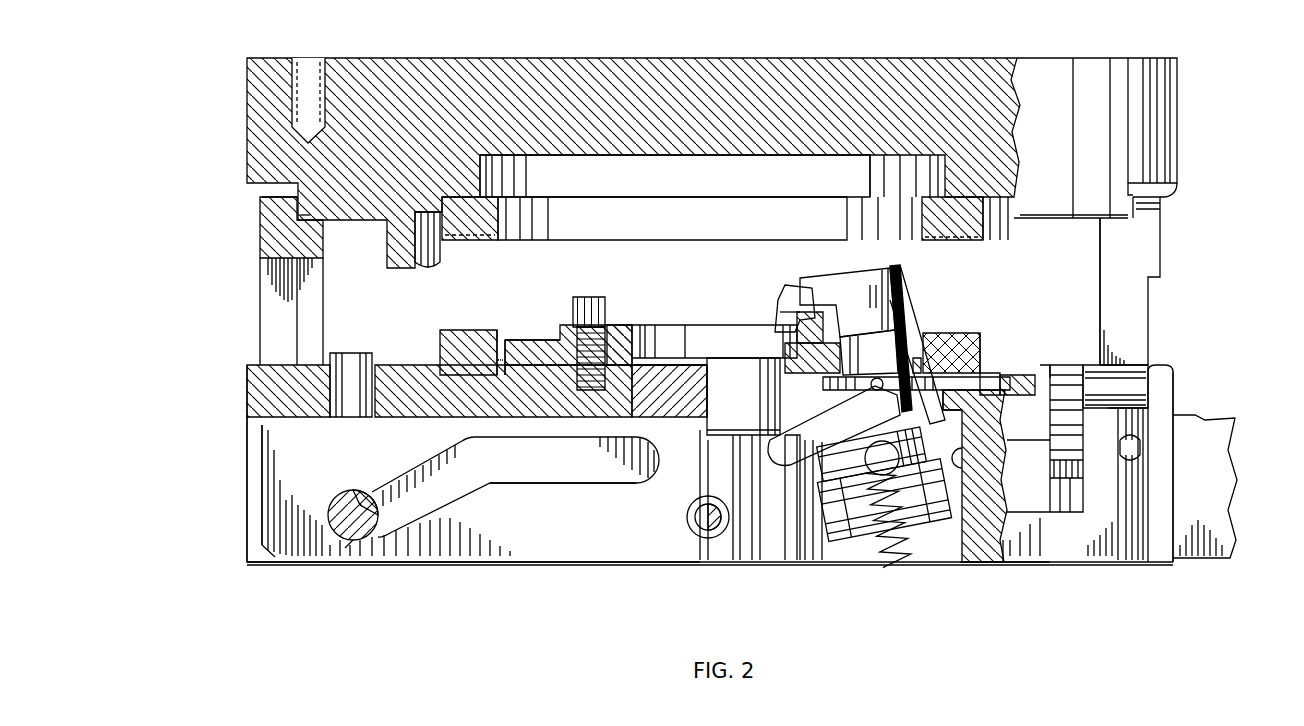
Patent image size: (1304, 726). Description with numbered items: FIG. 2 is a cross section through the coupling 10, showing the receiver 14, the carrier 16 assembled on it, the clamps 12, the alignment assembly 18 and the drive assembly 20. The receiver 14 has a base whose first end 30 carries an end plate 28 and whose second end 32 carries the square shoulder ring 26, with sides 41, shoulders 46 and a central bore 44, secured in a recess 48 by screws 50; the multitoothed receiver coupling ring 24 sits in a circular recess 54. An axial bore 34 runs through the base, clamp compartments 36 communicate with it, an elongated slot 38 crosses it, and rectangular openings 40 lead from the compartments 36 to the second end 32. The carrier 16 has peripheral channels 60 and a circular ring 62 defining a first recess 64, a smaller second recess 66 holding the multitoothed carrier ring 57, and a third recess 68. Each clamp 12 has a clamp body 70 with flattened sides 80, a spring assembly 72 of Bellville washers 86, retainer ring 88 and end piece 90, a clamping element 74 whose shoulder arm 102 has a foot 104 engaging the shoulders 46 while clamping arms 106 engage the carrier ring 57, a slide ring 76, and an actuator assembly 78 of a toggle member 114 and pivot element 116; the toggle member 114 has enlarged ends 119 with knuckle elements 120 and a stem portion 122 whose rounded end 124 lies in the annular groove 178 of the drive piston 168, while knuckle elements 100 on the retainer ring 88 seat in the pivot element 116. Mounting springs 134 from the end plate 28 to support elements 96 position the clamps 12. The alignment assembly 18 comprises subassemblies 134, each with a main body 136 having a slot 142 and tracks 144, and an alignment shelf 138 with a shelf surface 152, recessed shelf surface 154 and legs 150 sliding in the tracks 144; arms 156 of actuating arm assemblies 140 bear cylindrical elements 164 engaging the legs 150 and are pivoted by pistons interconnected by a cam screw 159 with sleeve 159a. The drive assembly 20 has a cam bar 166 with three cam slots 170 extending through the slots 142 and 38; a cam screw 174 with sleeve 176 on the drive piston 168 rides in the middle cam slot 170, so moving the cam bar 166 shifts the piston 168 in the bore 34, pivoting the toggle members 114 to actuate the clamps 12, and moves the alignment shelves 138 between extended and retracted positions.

The coupling 10 is at (1222, 292).
The clamp 12 is at (960, 290).
The receiver 14 is at (448, 317).
The carrier 16 is at (505, 58).
The alignment assembly 18 is at (1162, 262).
The drive assembly 20 is at (290, 490).
The multitoothed receiver coupling ring 24 is at (478, 345).
The shoulder ring 26 is at (645, 325).
The end plate 28 is at (1012, 570).
The first end 30 is at (988, 565).
The second end 32 is at (520, 335).
The axial bore 34 is at (715, 358).
The clamp compartments 36 is at (1005, 500).
The elongated slot 38 is at (490, 485).
The rectangular openings 40 is at (935, 345).
The sides 41 is at (797, 327).
The central bore 44 is at (640, 368).
The shoulder 46 is at (810, 280).
The recess 48 is at (620, 328).
The screws 50 is at (585, 297).
The circular recess 54 is at (501, 352).
The multitoothed carrier ring 57 is at (975, 197).
The outer peripheral channels 60 is at (1172, 192).
The circular ring 62 is at (395, 245).
The first recess 64 is at (425, 212).
The second recess 66 is at (594, 197).
The third circular recess 68 is at (676, 155).
The clamp body 70 is at (876, 344).
The spring assembly 72 is at (925, 500).
The clamping element 74 is at (862, 284).
The slide ring 76 is at (850, 400).
The actuator assembly 78 is at (990, 378).
The flattened sides 80 is at (886, 313).
The Bellville washers 86 is at (905, 510).
The retainer ring 88 is at (938, 494).
The circular end piece 90 is at (885, 550).
The support elements 96 is at (962, 438).
The knuckle elements 100 is at (950, 430).
The shoulder arm 102 is at (790, 290).
The foot 104 is at (795, 312).
The clamping arms 106 is at (900, 266).
The toggle member 114 is at (818, 480).
The pivot element 116 is at (950, 385).
The enlarged terminal end 119 is at (970, 368).
The knuckle elements 120 is at (985, 365).
The stem portion 122 is at (830, 490).
The rounded end 124 is at (812, 450).
The mounting springs 134 is at (255, 335).
The main body 136 is at (245, 545).
The alignment shelf 138 is at (262, 231).
The actuating arm assemblies 140 is at (1082, 443).
The elongated slot 142 is at (252, 417).
The tracks 144 is at (1130, 492).
The legs 150 is at (272, 312).
The shelf surface 152 is at (272, 196).
The inner recessed shelf surface 154 is at (305, 218).
The arm 156 is at (345, 388).
The cam screw 159 is at (362, 538).
The sleeve 159a is at (345, 540).
The cylindrical element 164 is at (1100, 388).
The cam bar 166 is at (282, 453).
The drive piston 168 is at (760, 540).
The cam slots 170 is at (540, 485).
The cam screw 174 is at (705, 540).
The sleeve 176 is at (692, 535).
The annular groove 178 is at (750, 535).